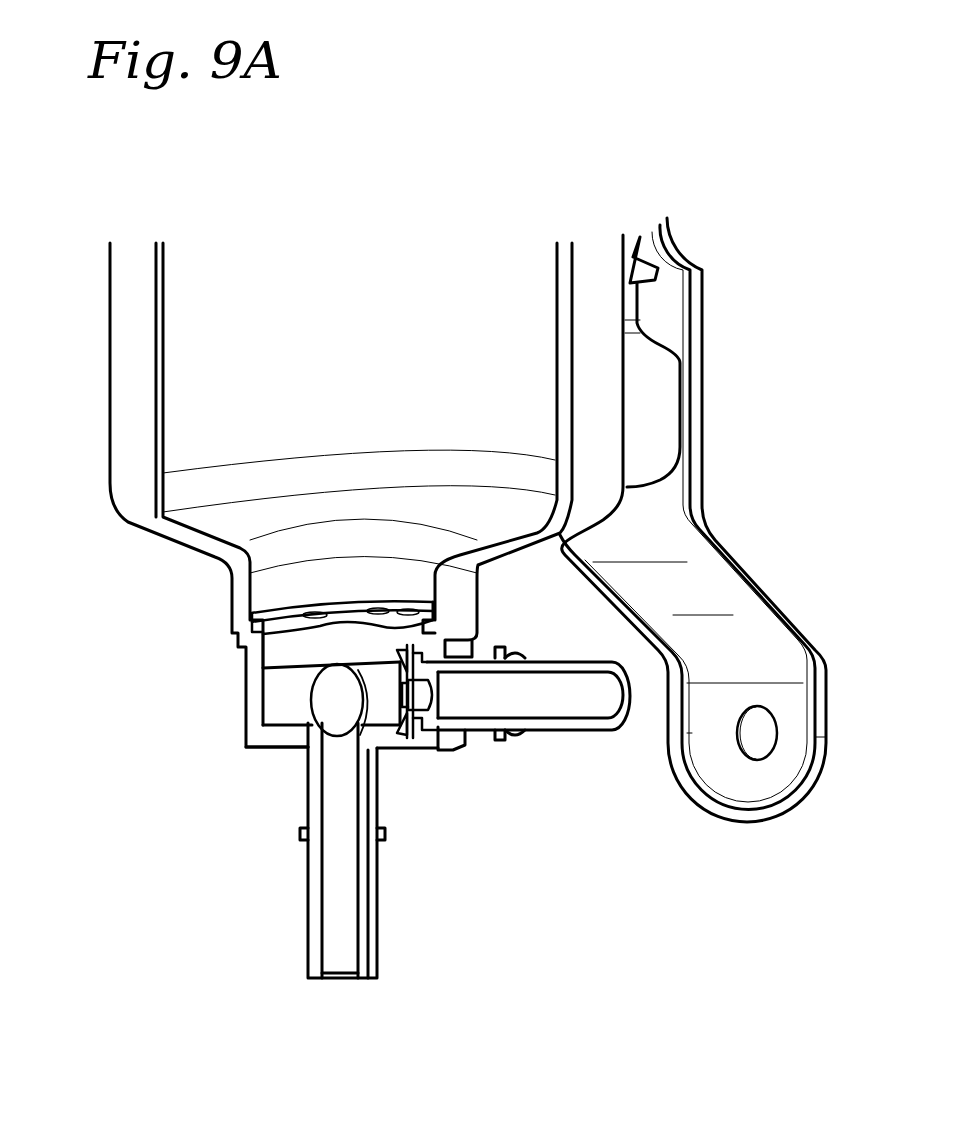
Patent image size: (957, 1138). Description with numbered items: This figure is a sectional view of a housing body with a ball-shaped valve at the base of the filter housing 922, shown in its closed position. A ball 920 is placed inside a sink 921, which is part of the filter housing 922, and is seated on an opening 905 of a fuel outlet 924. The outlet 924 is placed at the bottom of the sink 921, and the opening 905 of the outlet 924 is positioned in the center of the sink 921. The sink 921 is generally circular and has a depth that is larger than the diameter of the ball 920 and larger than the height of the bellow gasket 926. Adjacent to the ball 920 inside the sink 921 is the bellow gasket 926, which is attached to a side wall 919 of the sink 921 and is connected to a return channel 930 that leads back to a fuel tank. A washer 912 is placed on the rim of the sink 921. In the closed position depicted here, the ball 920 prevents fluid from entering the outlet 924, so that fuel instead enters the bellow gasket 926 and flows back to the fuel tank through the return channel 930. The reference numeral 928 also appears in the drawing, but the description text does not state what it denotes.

The opening 905 is at (320, 732).
The washer 912 is at (290, 622).
The side wall 919 is at (403, 720).
The ball 920 is at (342, 712).
The sink 921 is at (243, 719).
The filter housing 922 is at (728, 382).
The fuel outlet 924 is at (338, 925).
The bellow gasket 926 is at (428, 692).
The reservoir 928 is at (187, 420).
The return channel 930 is at (595, 703).